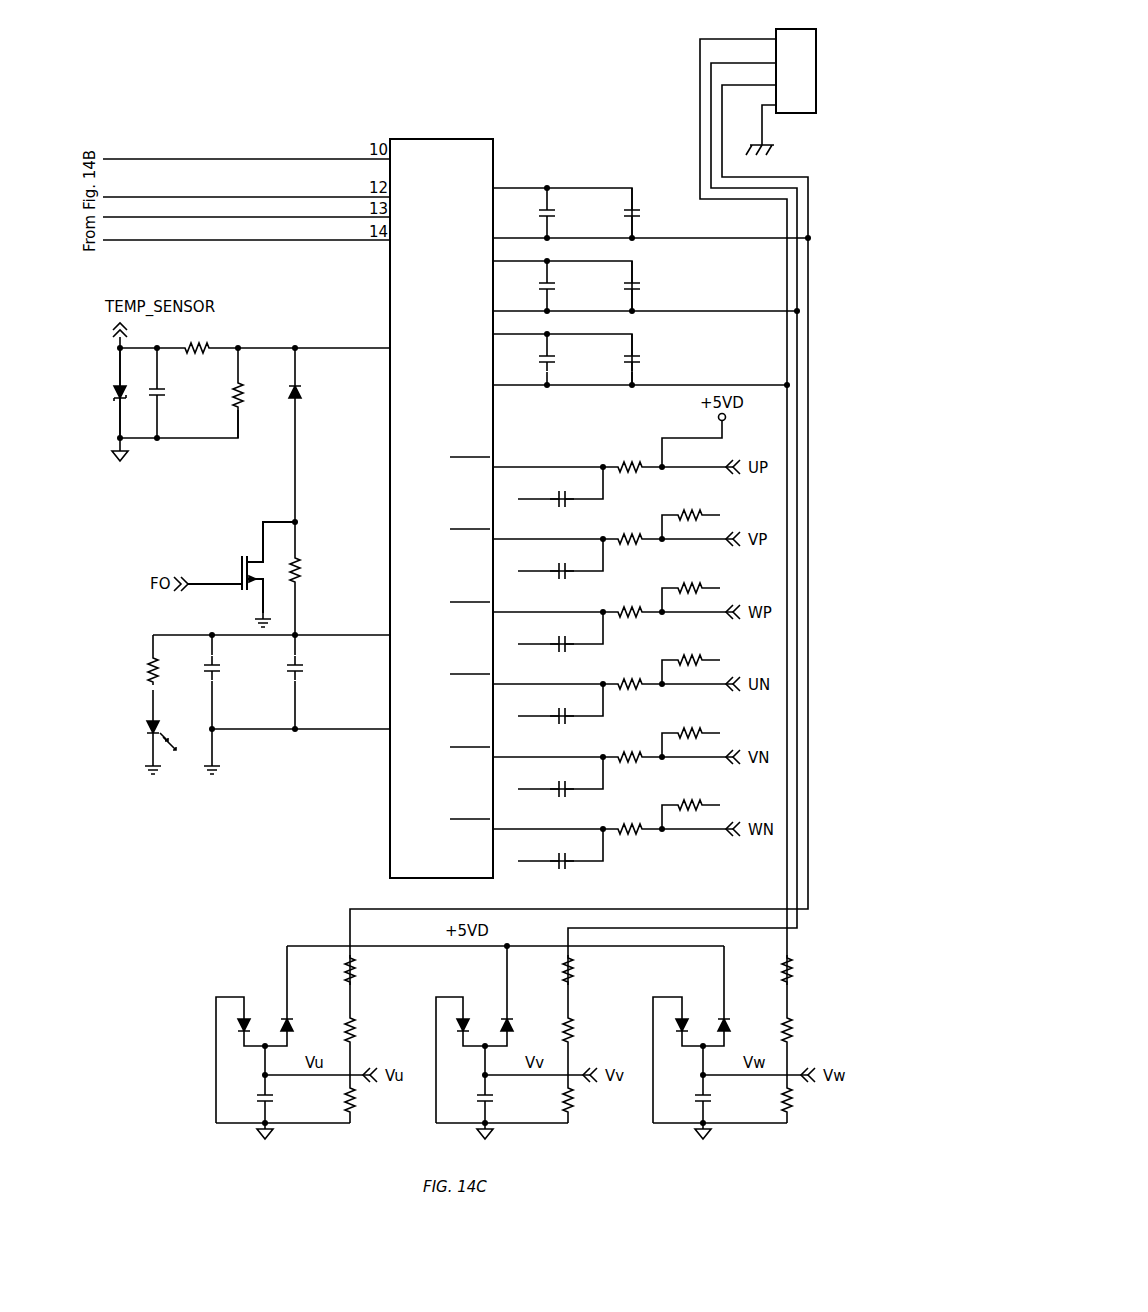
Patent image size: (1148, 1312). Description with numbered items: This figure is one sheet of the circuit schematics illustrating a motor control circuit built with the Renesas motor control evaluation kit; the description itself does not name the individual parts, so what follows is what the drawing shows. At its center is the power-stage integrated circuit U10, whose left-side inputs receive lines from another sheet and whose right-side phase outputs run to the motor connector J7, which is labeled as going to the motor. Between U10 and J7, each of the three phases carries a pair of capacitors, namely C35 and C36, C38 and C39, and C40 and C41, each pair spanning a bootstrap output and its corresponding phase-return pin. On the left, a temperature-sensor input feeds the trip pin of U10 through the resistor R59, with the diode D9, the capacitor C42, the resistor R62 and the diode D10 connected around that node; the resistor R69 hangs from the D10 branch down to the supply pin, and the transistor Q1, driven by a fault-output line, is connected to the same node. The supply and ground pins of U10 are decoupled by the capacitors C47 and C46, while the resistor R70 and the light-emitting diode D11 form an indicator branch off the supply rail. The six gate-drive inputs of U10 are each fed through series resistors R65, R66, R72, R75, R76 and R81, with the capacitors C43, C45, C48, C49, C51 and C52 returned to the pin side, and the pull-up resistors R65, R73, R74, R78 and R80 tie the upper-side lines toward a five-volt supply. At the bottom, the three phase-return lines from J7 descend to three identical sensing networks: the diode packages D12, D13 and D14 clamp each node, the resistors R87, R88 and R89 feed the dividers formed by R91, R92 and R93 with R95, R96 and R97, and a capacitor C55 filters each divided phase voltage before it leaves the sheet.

The motor driver IC RAMS10UP6OA U10 is at (457, 497).
The motor connector MSTBA2.5/4-G-5.06 J7 is at (830, 81).
The bootstrap capacitor 22uF C35 is at (559, 213).
The bootstrap capacitor 10uF 25V C36 is at (661, 213).
The bootstrap capacitor 22uF C38 is at (559, 286).
The bootstrap capacitor 10uF 25V C39 is at (661, 286).
The bootstrap capacitor 22uF C40 is at (559, 359).
The bootstrap capacitor 10uF 25V C41 is at (661, 359).
The resistor 4K7 R59 is at (197, 348).
The zener diode MM3Z52316 D9 is at (102, 387).
The capacitor 1uF 35V C42 is at (182, 393).
The resistor 6.6K R62 is at (257, 393).
The diode 1N4148 D10 is at (326, 435).
The resistor 10K 5% R69 is at (326, 578).
The MOSFET 2N7002 Q1 is at (240, 573).
The resistor 2K2 R70 is at (170, 671).
The LED D11 is at (174, 733).
The capacitor 0.1uF C47 is at (226, 670).
The capacitor 10uF 25V C46 is at (324, 670).
The resistor 330E / 4.7K R65 is at (666, 491).
The resistor 330E R66 is at (631, 539).
The resistor 330E R72 is at (631, 612).
The pull-up resistor 4.7K R73 is at (691, 590).
The pull-up resistor 4.7K R74 is at (691, 662).
The resistor 330E R75 is at (631, 684).
The resistor 330E R76 is at (631, 757).
The pull-up resistor 4.7K R78 is at (691, 735).
The pull-up resistor 4.7K R80 is at (691, 807).
The resistor 330E R81 is at (631, 829).
The capacitor 1000pF C43 is at (560, 497).
The capacitor 1000pF C45 is at (560, 569).
The capacitor 1000pF C48 is at (560, 642).
The capacitor 1000pF C49 is at (560, 714).
The capacitor 1000pF C51 is at (560, 787).
The capacitor 1000pF C52 is at (560, 859).
The dual Schottky diode BAT54S D12 is at (254, 1034).
The dual Schottky diode BAT54S D13 is at (474, 1034).
The dual Schottky diode BAT54S D14 is at (691, 1034).
The resistor 0E R87 is at (366, 974).
The resistor 0E R88 is at (584, 967).
The resistor 0E R89 is at (803, 974).
The resistor 90.9K 1% R91 is at (387, 1035).
The resistor 90.9K 1% R92 is at (605, 1035).
The resistor 90.9K 1% R93 is at (824, 1035).
The resistor 10K 1% R95 is at (380, 1104).
The resistor 10K 1% R96 is at (598, 1104).
The resistor 10K 1% R97 is at (817, 1104).
The capacitor 0.015uF C55 is at (515, 1099).